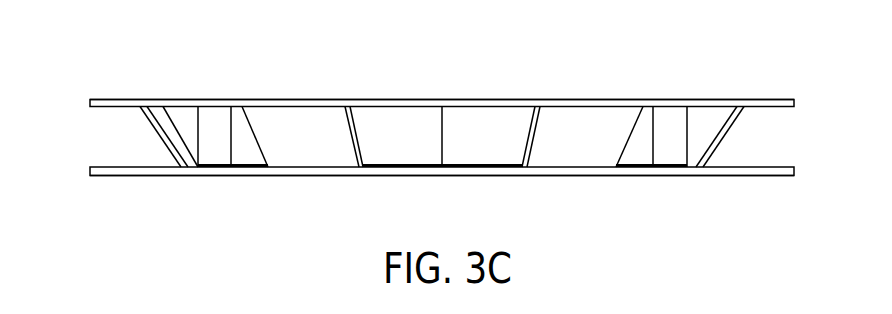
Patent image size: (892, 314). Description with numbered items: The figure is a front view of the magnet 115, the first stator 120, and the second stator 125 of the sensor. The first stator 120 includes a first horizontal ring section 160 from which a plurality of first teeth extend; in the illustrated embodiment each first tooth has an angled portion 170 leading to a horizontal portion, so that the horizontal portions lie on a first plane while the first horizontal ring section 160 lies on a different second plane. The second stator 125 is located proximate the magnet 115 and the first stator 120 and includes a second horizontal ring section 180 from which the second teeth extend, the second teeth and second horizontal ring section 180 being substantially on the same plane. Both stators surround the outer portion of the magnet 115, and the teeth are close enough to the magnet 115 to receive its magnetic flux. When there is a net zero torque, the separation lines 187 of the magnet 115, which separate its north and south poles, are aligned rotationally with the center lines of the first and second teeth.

The magnet 115 is at (223, 125).
The first stator 120 is at (712, 90).
The second stator 125 is at (681, 193).
The first horizontal ring section 160 is at (118, 102).
The angled portion 170 is at (163, 143).
The second horizontal ring section 180 is at (137, 177).
The separation lines 187 is at (442, 122).